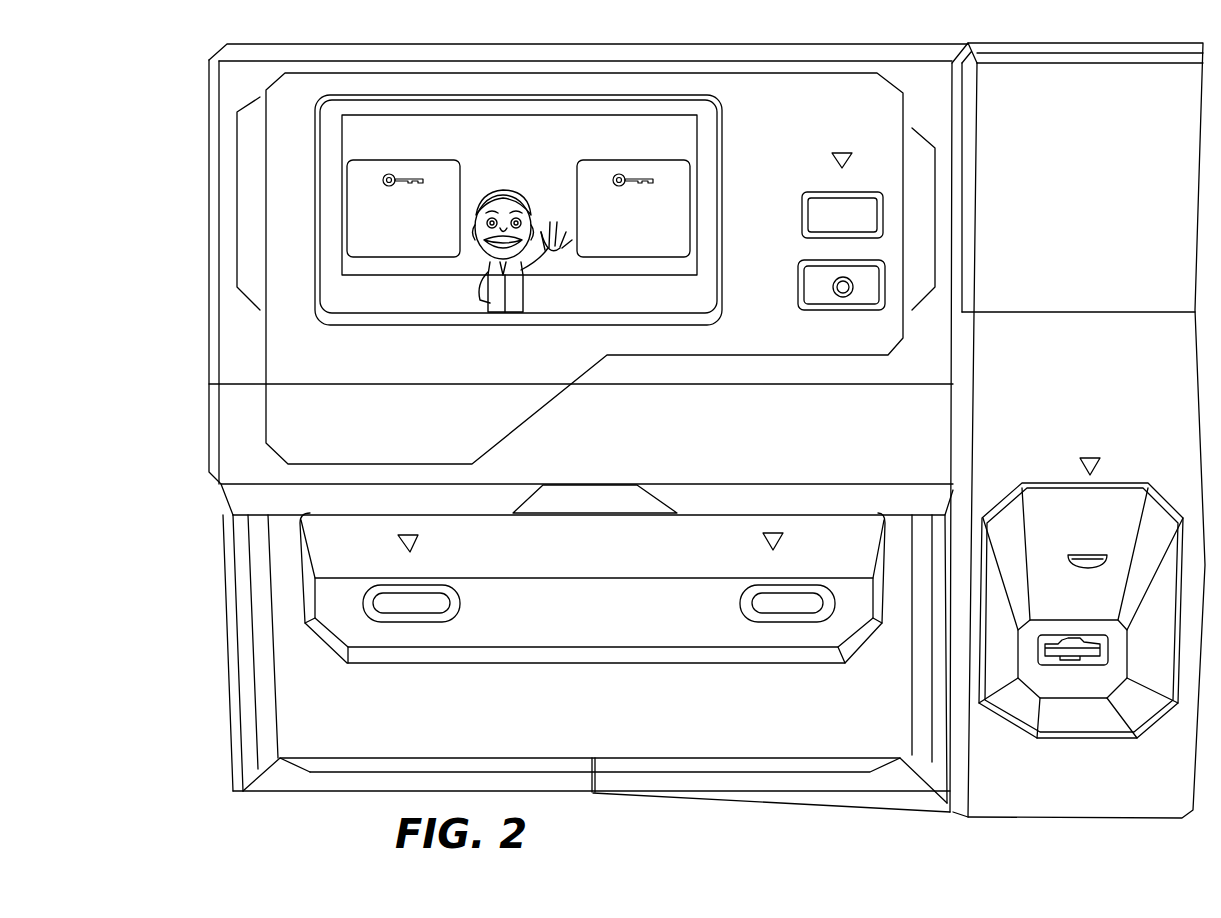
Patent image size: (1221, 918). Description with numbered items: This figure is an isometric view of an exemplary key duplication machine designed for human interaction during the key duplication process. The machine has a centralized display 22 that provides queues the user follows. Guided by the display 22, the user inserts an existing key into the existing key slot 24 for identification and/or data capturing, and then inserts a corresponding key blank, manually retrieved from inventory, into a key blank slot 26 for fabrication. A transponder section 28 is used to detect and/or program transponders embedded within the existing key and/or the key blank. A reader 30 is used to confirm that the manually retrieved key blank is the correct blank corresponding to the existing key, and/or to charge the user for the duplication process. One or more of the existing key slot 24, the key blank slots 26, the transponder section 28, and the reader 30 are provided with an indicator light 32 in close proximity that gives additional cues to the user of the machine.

The centralized display 22 is at (237, 205).
The existing key slot 24 is at (1050, 660).
The key blank slot 26 is at (410, 622).
The transponder section 28 is at (937, 217).
The reader 30 is at (625, 493).
The indicator light 32 is at (848, 152).